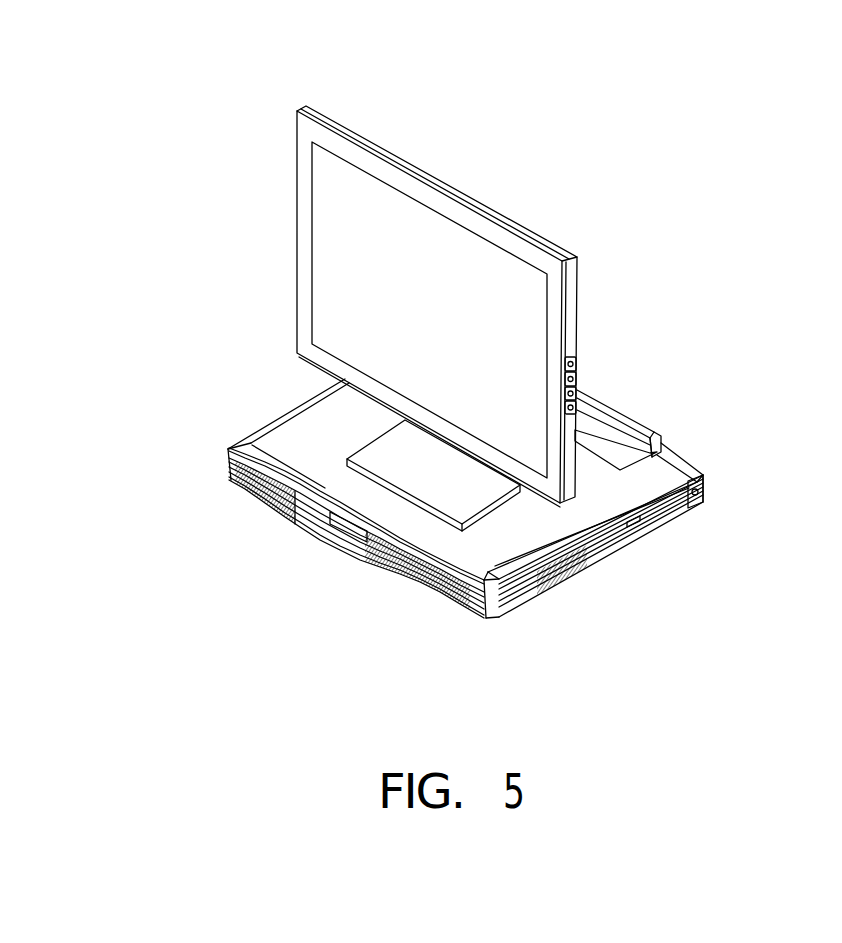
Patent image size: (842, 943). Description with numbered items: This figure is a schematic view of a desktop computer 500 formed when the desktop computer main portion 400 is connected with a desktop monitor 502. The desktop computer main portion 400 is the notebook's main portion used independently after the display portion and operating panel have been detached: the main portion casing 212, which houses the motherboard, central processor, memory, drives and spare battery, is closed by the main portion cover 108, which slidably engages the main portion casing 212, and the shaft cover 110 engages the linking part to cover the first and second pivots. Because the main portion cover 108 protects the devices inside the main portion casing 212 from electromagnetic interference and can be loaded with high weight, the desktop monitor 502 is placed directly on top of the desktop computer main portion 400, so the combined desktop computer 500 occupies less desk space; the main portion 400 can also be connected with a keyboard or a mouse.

The desktop computer 500 is at (802, 109).
The desktop monitor 502 is at (420, 182).
The desktop computer main portion 400 is at (537, 600).
The main portion cover 108 is at (342, 480).
The shaft cover 110 is at (623, 422).
The main portion casing 212 is at (253, 441).